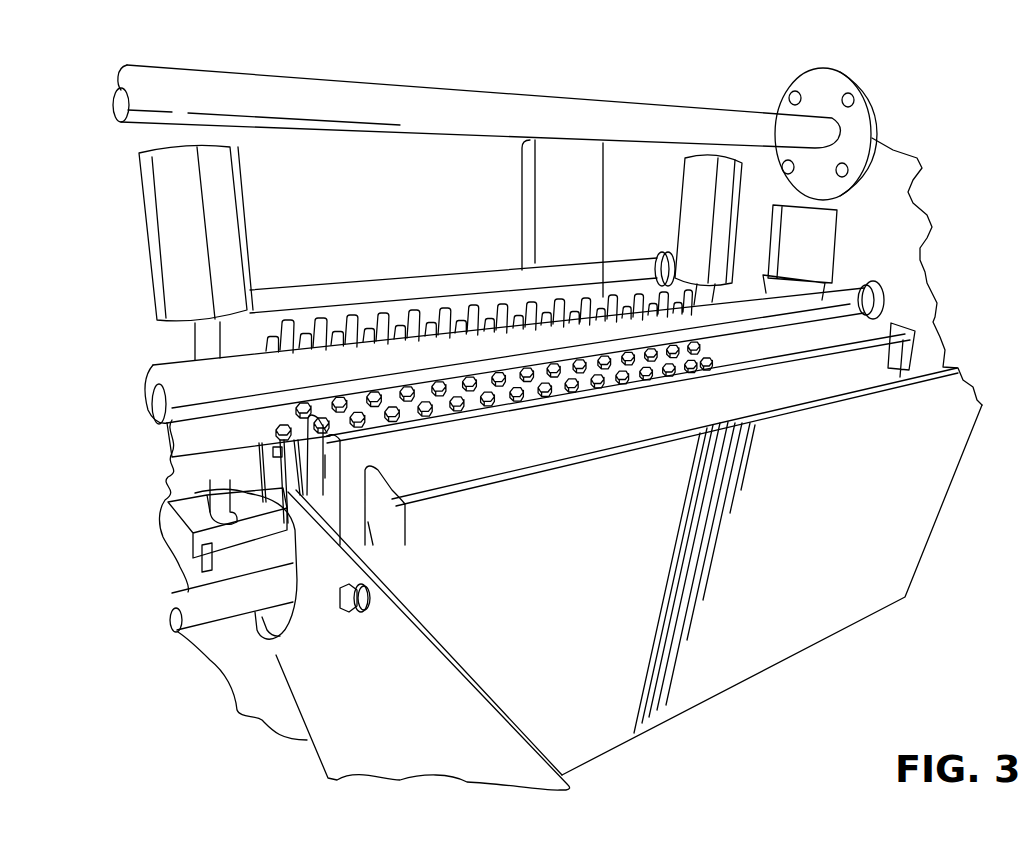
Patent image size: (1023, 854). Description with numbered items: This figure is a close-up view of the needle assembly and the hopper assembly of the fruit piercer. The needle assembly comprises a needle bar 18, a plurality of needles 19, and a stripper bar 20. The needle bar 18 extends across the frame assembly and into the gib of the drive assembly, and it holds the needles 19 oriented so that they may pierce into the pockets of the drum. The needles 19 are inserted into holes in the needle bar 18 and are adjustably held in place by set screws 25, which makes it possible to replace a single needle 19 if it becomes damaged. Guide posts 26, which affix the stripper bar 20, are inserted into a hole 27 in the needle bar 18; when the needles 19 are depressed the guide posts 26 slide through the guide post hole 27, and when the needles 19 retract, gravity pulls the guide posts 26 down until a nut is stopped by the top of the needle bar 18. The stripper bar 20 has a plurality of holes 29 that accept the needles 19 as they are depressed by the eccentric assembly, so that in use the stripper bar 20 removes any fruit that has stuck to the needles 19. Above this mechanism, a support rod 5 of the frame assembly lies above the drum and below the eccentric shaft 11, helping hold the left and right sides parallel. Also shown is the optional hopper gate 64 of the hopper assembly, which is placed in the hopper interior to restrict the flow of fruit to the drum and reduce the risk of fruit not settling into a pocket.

The support rod 5 is at (842, 302).
The eccentric shaft 11 is at (640, 113).
The needle bar 18 is at (192, 440).
The needles 19 is at (265, 333).
The stripper bar 20 is at (197, 627).
The set screws 25 is at (717, 357).
The guide posts 26 is at (197, 495).
The guide post hole 27 is at (195, 493).
The holes 29 is at (277, 642).
The hopper gate 64 is at (658, 426).